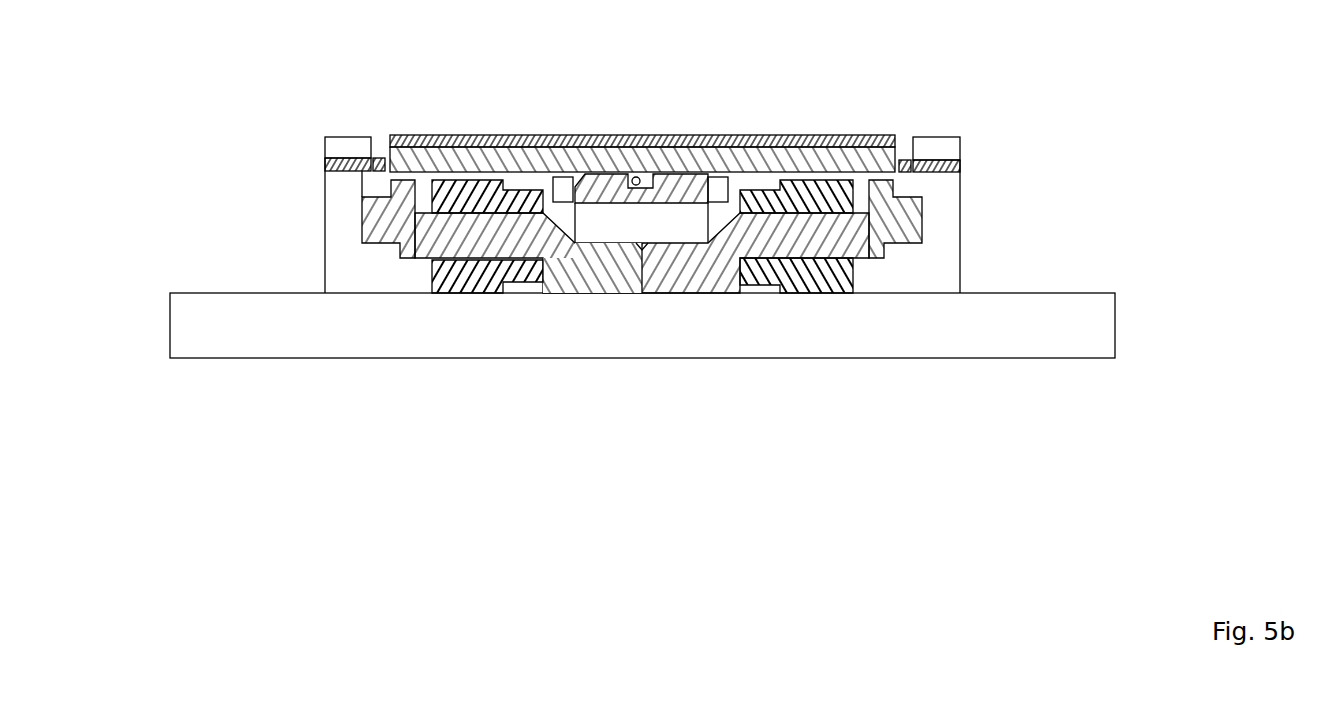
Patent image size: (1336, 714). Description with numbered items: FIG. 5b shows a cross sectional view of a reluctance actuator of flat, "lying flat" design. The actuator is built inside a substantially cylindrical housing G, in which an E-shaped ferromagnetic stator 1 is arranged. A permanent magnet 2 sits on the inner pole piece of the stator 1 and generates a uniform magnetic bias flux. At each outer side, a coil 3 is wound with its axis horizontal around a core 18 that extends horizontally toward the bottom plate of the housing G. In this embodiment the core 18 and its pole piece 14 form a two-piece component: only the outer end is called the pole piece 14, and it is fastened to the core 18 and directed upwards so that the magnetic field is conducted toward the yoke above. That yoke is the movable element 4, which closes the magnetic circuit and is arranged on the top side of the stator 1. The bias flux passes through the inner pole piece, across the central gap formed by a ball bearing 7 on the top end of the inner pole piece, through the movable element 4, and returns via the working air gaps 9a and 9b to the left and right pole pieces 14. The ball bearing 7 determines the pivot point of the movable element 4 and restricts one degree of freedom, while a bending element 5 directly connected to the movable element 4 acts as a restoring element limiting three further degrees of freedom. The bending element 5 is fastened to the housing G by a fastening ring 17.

The stator 1 is at (685, 143).
The permanent magnet 2 is at (623, 222).
The coil 3 is at (472, 283).
The movable element 4 is at (453, 155).
The bending element 5 is at (830, 141).
The ball bearing 7 is at (634, 177).
The working air gap 9a is at (887, 177).
The working air gap 9b is at (403, 173).
The pole piece 14 is at (905, 218).
The fastening ring 17 is at (940, 143).
The core 18 is at (772, 245).
The housing G is at (925, 258).